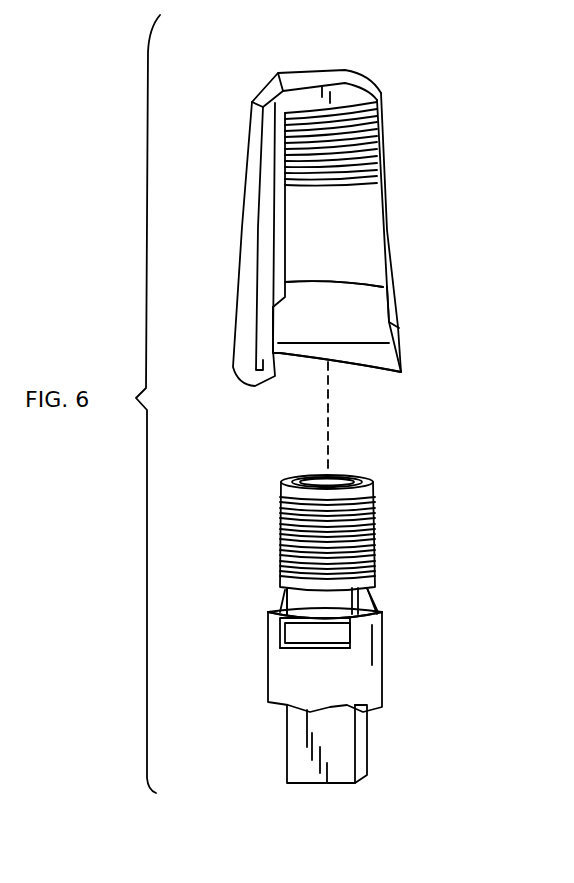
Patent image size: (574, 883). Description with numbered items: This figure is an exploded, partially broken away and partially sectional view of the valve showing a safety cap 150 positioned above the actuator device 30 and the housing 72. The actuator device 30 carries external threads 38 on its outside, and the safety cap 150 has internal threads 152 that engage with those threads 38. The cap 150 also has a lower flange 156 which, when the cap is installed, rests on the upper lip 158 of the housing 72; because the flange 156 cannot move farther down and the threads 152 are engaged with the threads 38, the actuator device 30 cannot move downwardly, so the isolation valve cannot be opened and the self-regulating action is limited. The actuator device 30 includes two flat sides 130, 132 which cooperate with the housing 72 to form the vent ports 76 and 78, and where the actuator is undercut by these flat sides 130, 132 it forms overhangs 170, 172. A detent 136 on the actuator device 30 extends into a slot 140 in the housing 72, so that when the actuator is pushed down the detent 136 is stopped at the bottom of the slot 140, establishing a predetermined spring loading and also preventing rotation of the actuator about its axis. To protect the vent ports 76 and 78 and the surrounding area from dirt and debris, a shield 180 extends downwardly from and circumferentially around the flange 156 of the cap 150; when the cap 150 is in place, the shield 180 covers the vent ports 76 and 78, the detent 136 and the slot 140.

The safety cap 150 is at (282, 72).
The internal threads 152 is at (358, 126).
The lower flange 156 is at (347, 280).
The shield 180 is at (352, 323).
The threads 38 is at (375, 490).
The actuator device 30 is at (368, 594).
The overhang 170 is at (284, 597).
The vent port 76 is at (287, 609).
The vent port 78 is at (382, 599).
The overhang 172 is at (378, 608).
The housing 72 is at (385, 658).
The upper lip 158 is at (272, 612).
The detent 136 is at (292, 622).
The slot 140 is at (308, 650).
The flat side 130 is at (283, 740).
The flat side 132 is at (363, 748).